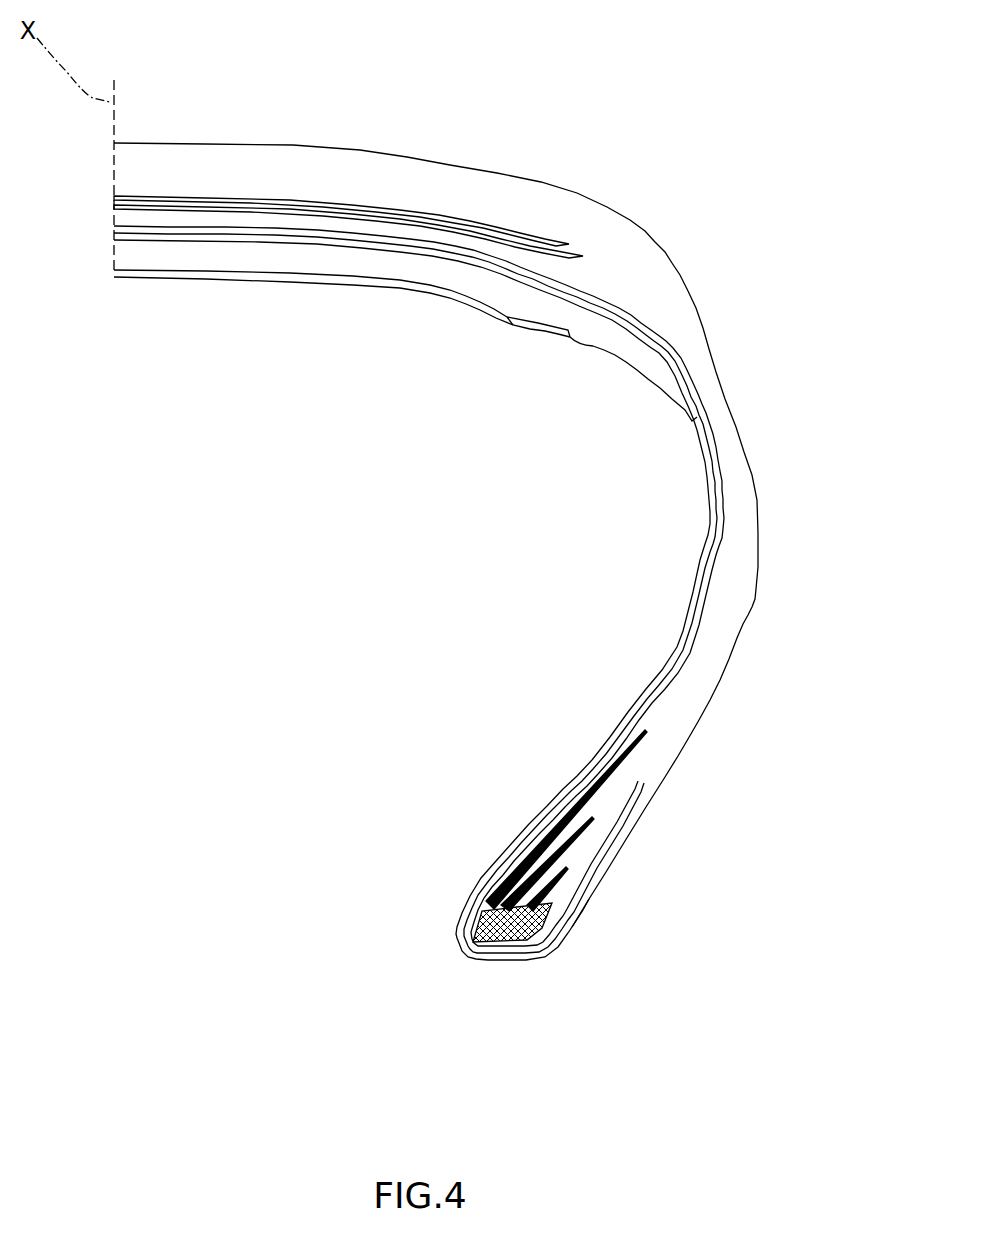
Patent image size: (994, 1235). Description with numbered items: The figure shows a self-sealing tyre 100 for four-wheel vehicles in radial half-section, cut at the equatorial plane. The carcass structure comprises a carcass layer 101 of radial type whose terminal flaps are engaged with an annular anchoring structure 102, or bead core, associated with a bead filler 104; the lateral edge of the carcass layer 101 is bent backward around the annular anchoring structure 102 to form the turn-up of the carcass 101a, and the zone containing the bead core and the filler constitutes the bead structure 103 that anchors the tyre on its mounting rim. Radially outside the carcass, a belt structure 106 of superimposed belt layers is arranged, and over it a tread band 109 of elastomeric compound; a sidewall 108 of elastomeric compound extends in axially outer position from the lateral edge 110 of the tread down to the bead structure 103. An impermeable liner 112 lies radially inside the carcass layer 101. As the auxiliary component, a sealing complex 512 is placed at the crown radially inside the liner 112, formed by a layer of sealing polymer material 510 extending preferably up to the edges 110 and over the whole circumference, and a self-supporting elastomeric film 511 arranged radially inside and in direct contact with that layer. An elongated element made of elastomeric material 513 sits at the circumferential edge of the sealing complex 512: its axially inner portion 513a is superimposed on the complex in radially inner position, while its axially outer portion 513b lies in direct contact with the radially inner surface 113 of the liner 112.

The tyre 100 is at (248, 625).
The carcass layer 101 is at (641, 287).
The turn-ups of the carcass 101a is at (408, 242).
The annular anchoring structure 102 is at (492, 937).
The bead structure 103 is at (619, 970).
The bead filler 104 is at (577, 820).
The belt structure 106 is at (441, 189).
The sidewall 108 is at (757, 530).
The tread band 109 is at (214, 133).
The lateral edge of the tread 110 is at (714, 364).
The liner 112 is at (710, 527).
The radially inner surface of the liner 113 is at (660, 638).
The layer of sealing polymer material 510 is at (228, 255).
The self-supporting elastomeric film 511 is at (292, 280).
The sealing complex 512 is at (136, 264).
The elongated element made of elastomeric material 513 is at (513, 325).
The axially inner portion 513a is at (595, 347).
The axially outer portion 513b is at (685, 410).